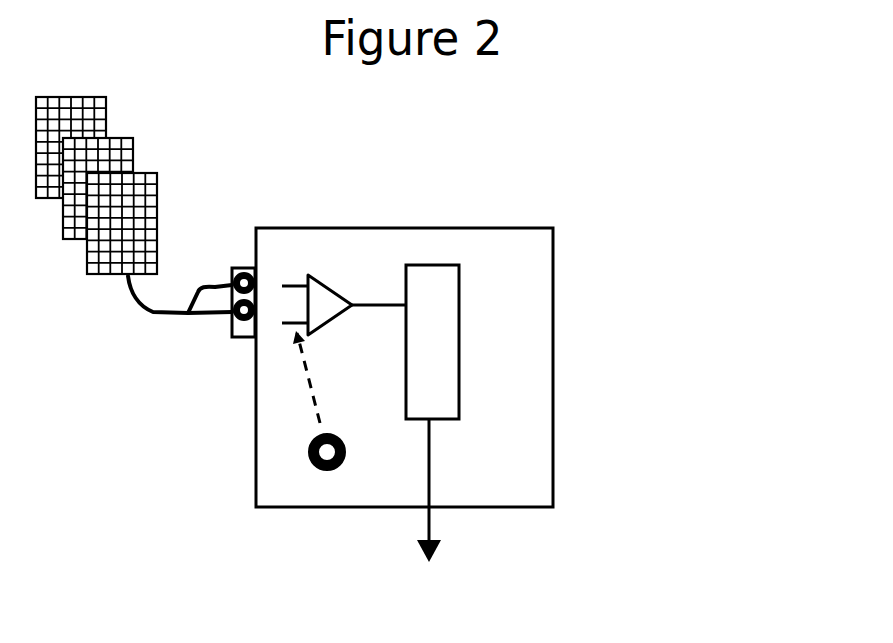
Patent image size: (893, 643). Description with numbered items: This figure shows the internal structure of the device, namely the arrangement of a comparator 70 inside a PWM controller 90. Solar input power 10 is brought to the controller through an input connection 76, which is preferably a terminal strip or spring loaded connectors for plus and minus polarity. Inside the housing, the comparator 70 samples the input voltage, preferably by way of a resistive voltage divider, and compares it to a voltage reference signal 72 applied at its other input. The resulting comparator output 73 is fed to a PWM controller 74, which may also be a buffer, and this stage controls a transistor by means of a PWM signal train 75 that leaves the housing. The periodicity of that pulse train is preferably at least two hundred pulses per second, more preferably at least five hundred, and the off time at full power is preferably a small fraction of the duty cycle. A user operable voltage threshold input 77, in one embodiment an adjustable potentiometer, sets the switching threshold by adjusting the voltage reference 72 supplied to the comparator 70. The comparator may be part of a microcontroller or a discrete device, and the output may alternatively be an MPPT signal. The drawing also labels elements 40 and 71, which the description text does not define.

The solar input power 10 is at (155, 160).
The cable / wires 40 is at (132, 308).
The input connection 76 is at (230, 325).
The PWM controller 90 is at (232, 446).
The comparator 70 is at (323, 305).
The first input 71 is at (293, 285).
The voltage reference signal 72 is at (297, 322).
The comparator output 73 is at (375, 303).
The PWM controller 74 is at (428, 285).
The PWM signal train 75 is at (434, 508).
The user operable voltage threshold input 77 is at (298, 453).